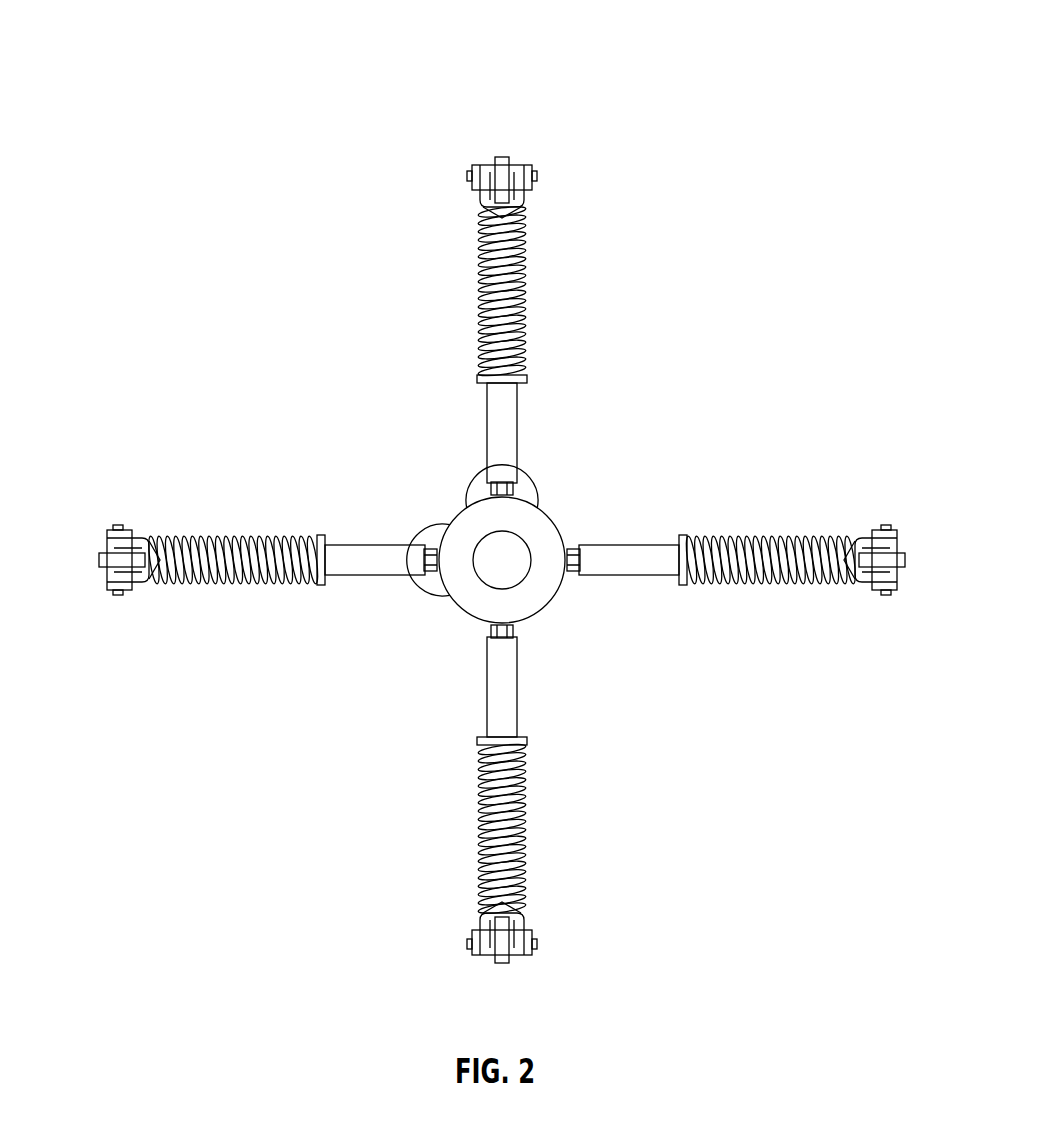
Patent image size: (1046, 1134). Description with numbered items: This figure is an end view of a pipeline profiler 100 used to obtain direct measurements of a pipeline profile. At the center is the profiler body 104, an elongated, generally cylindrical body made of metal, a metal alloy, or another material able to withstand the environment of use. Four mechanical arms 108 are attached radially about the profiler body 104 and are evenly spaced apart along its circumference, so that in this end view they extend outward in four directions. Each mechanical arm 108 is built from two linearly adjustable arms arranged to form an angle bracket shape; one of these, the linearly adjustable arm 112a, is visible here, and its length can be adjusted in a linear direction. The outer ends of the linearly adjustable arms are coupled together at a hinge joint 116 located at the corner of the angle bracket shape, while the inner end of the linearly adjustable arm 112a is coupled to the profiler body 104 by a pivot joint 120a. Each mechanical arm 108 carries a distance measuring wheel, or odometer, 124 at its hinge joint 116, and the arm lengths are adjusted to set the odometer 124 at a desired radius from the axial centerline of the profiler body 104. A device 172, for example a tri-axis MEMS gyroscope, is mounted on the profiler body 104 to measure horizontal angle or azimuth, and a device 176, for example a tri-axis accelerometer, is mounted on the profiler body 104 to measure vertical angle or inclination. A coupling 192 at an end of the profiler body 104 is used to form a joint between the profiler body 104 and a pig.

The pipeline profiler 100 is at (527, 72).
The profiler body 104 is at (552, 521).
The mechanical arm 108 is at (502, 556).
The linearly adjustable arm 112a is at (500, 445).
The hinge joint 116 is at (537, 177).
The pivot joint 120a is at (432, 572).
The distance measuring wheel 124 is at (501, 163).
The device to measure horizontal angle 172 is at (530, 483).
The device to measure vertical angle 176 is at (424, 530).
The coupling 192 is at (515, 570).